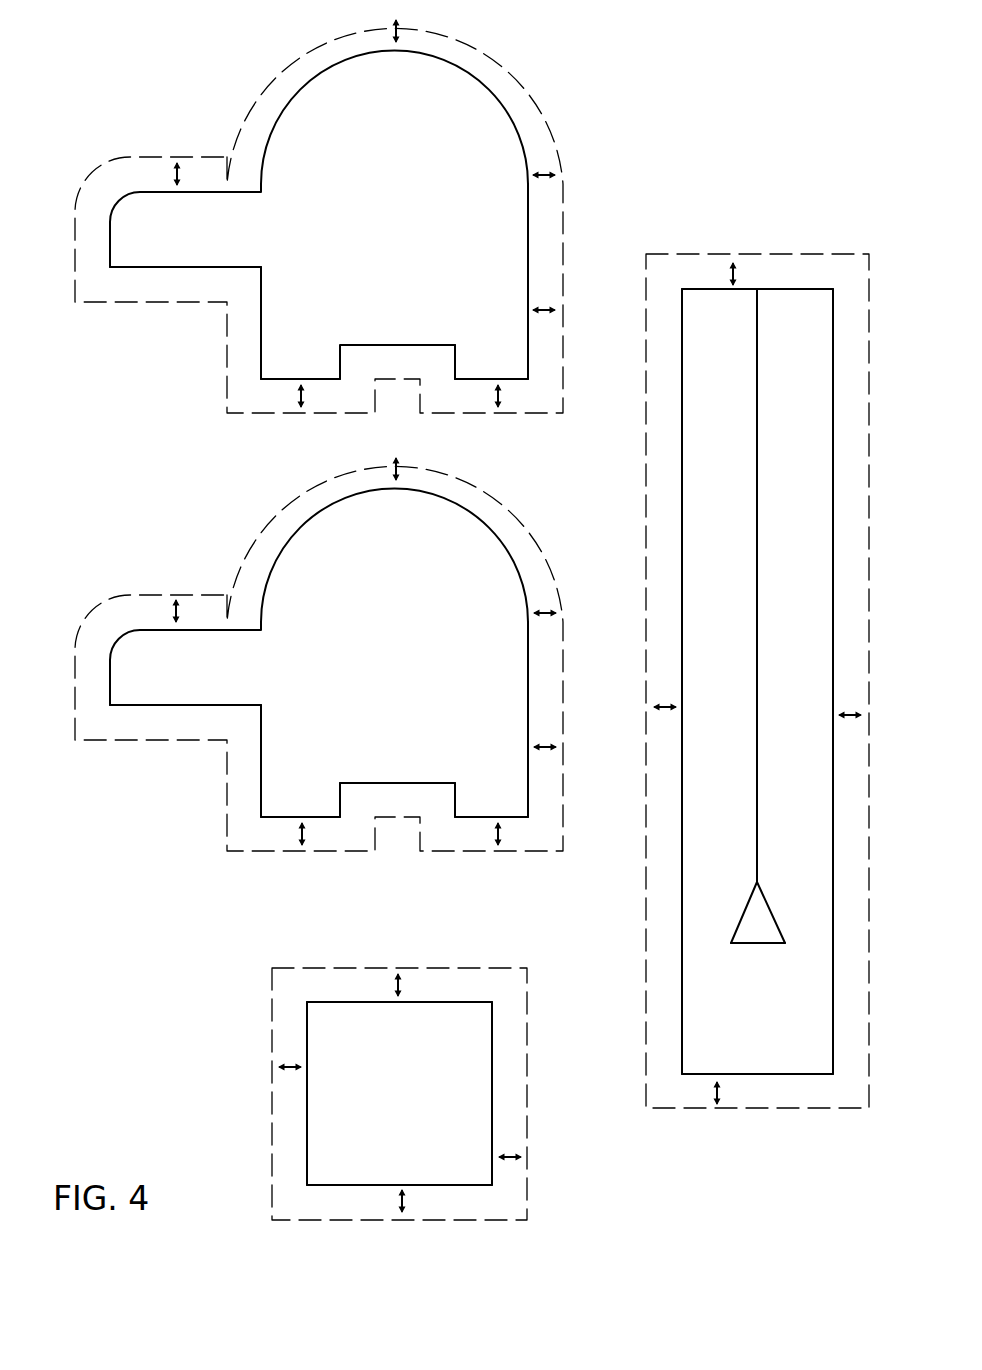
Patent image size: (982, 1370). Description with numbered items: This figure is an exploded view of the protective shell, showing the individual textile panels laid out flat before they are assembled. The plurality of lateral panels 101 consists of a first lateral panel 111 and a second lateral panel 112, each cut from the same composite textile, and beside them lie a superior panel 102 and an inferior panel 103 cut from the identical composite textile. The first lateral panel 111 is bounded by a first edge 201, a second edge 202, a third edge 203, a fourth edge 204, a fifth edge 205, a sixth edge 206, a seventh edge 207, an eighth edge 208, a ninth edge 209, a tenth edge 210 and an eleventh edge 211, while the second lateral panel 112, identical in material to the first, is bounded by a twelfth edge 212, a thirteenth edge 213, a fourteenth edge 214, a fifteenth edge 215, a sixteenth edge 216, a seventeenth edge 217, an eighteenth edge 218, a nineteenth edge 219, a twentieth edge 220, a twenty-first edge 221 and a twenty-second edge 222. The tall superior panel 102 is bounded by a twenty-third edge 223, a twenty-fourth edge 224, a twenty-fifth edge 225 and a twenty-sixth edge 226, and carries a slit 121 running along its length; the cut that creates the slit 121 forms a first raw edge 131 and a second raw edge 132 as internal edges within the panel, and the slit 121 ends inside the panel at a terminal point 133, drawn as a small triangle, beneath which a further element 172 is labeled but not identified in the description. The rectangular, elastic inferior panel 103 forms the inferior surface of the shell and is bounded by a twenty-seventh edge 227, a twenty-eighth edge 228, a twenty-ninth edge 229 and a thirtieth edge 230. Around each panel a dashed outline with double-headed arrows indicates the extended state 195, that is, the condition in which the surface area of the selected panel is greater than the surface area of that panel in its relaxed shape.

The plurality of lateral panels 101 is at (142, 583).
The superior panel 102 is at (847, 410).
The inferior panel 103 is at (292, 1008).
The first lateral panel 111 is at (530, 78).
The second lateral panel 112 is at (513, 547).
The slit 121 is at (745, 635).
The first raw edge 131 is at (757, 433).
The second raw edge 132 is at (757, 455).
The terminal point 133 is at (772, 888).
The triangular element base 172 is at (753, 943).
The extended state 195 is at (657, 273).
The first edge 201 is at (222, 267).
The second edge 202 is at (110, 248).
The third edge 203 is at (230, 192).
The fourth edge 204 is at (358, 57).
The fifth edge 205 is at (528, 219).
The sixth edge 206 is at (499, 379).
The seventh edge 207 is at (456, 372).
The eighth edge 208 is at (420, 345).
The ninth edge 209 is at (341, 371).
The tenth edge 210 is at (296, 379).
The eleventh edge 211 is at (261, 333).
The twelfth edge 212 is at (235, 705).
The thirteenth edge 213 is at (110, 679).
The fourteenth edge 214 is at (199, 630).
The fifteenth edge 215 is at (293, 535).
The sixteenth edge 216 is at (528, 634).
The seventeenth edge 217 is at (498, 817).
The eighteenth edge 218 is at (453, 803).
The nineteenth edge 219 is at (397, 783).
The twentieth edge 220 is at (340, 800).
The twenty-first edge 221 is at (292, 817).
The twenty-second edge 222 is at (261, 748).
The twenty-third edge 223 is at (783, 289).
The twenty-fourth edge 224 is at (833, 570).
The twenty-fifth edge 225 is at (783, 1074).
The twenty-sixth edge 226 is at (682, 1023).
The twenty-seventh edge 227 is at (371, 1003).
The twenty-eighth edge 228 is at (492, 1118).
The twenty-ninth edge 229 is at (380, 1185).
The thirtieth edge 230 is at (307, 1093).